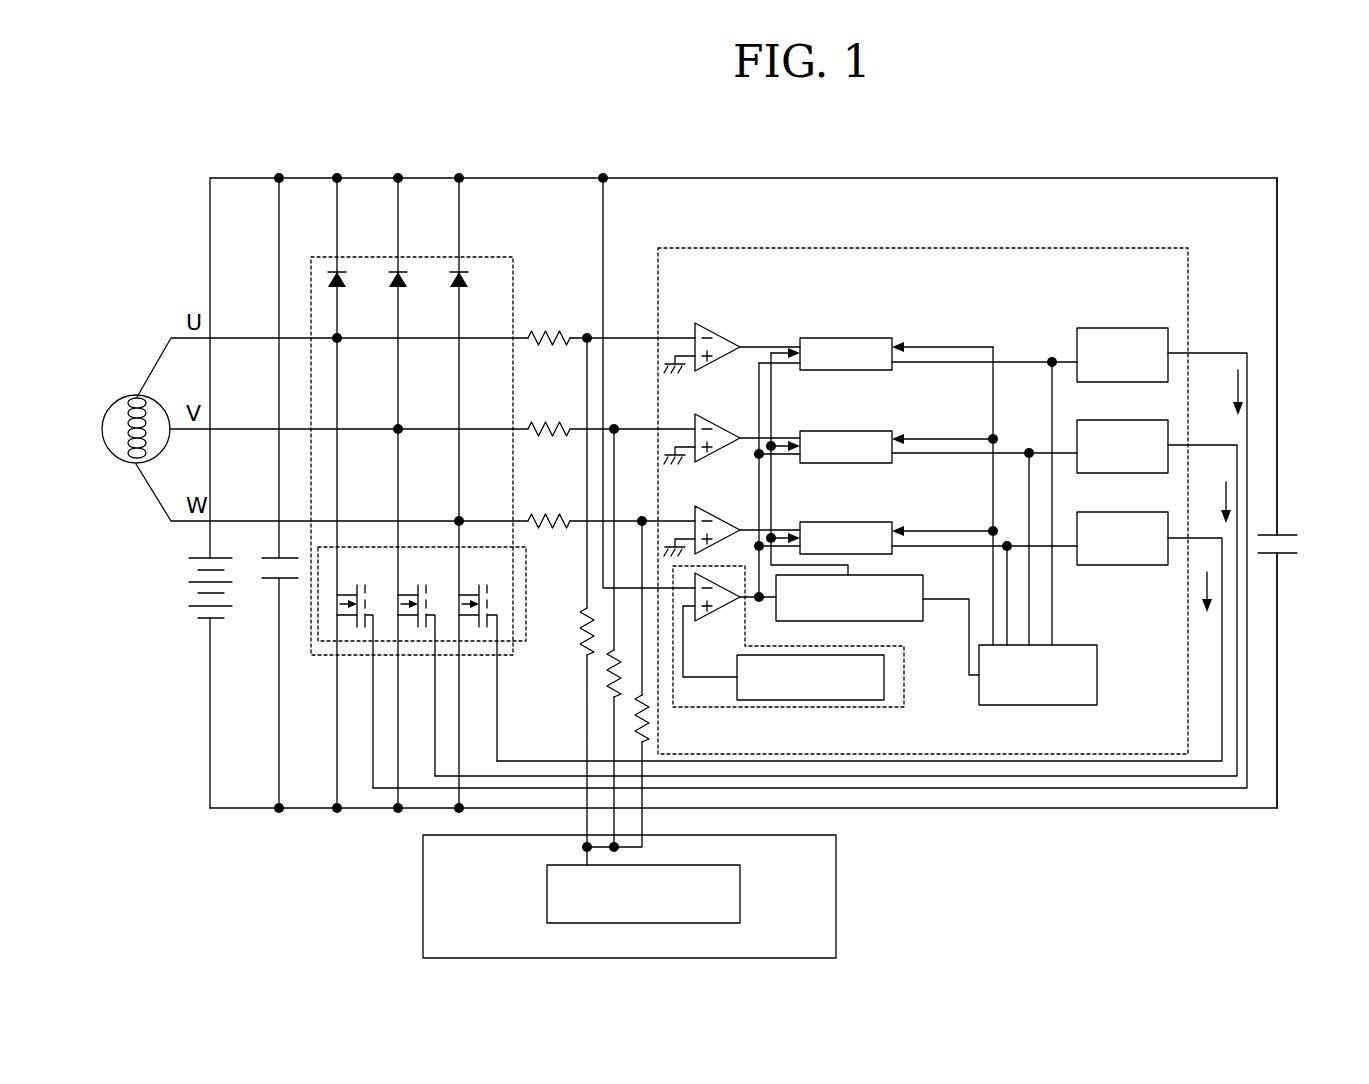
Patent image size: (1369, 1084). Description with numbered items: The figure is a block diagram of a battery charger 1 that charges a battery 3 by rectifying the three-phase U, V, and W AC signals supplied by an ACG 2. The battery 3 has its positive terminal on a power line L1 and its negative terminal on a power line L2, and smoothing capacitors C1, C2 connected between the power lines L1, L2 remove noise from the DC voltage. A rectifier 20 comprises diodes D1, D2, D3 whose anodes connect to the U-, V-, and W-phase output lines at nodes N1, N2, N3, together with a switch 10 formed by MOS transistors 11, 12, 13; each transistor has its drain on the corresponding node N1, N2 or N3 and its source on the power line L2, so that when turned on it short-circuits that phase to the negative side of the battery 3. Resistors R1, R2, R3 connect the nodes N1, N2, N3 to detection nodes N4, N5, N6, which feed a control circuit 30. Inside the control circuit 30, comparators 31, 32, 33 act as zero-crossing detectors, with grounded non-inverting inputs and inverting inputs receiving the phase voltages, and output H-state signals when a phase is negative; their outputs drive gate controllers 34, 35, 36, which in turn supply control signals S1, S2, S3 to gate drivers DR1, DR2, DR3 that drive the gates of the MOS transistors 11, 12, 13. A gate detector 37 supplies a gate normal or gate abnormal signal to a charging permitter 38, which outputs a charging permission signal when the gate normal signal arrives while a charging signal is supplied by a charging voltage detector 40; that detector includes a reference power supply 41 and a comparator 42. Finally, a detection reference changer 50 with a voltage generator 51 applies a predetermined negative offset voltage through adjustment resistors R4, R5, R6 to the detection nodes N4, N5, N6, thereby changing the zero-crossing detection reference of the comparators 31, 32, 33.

The battery charger 1 is at (997, 140).
The ACG 2 is at (118, 398).
The battery 3 is at (189, 576).
The switch 10 is at (526, 562).
The MOS transistor 11 is at (359, 600).
The MOS transistor 12 is at (420, 600).
The MOS transistor 13 is at (481, 600).
The rectifier 20 is at (311, 657).
The control circuit 30 is at (893, 247).
The comparator 31 is at (715, 334).
The comparator 32 is at (704, 424).
The comparator 33 is at (704, 516).
The gate controller 34 is at (852, 338).
The gate controller 35 is at (852, 429).
The gate controller 36 is at (852, 521).
The gate detector 37 is at (1097, 677).
The charging permitter 38 is at (923, 583).
The charging voltage detector 40 is at (880, 709).
The reference power supply 41 is at (812, 702).
The comparator 42 is at (723, 616).
The detection reference changer 50 is at (836, 858).
The voltage generator 51 is at (547, 893).
The capacitor C1 is at (274, 582).
The capacitor C2 is at (1282, 530).
The diode D1 is at (341, 288).
The diode D2 is at (402, 288).
The diode D3 is at (463, 288).
The power line L1 is at (528, 176).
The power line L2 is at (240, 811).
The node N1 is at (341, 343).
The node N2 is at (402, 434).
The node N3 is at (463, 517).
The node N4 is at (590, 334).
The node N5 is at (616, 424).
The node N6 is at (641, 518).
The resistor R1 is at (546, 334).
The resistor R2 is at (546, 425).
The resistor R3 is at (546, 516).
The resistor R4 is at (582, 634).
The resistor R5 is at (610, 674).
The resistor R6 is at (646, 722).
The gate driver DR1 is at (1091, 328).
The gate driver DR2 is at (1091, 420).
The gate driver DR3 is at (1091, 512).
The control signal S1 is at (810, 570).
The control signal S2 is at (836, 610).
The control signal S3 is at (859, 649).